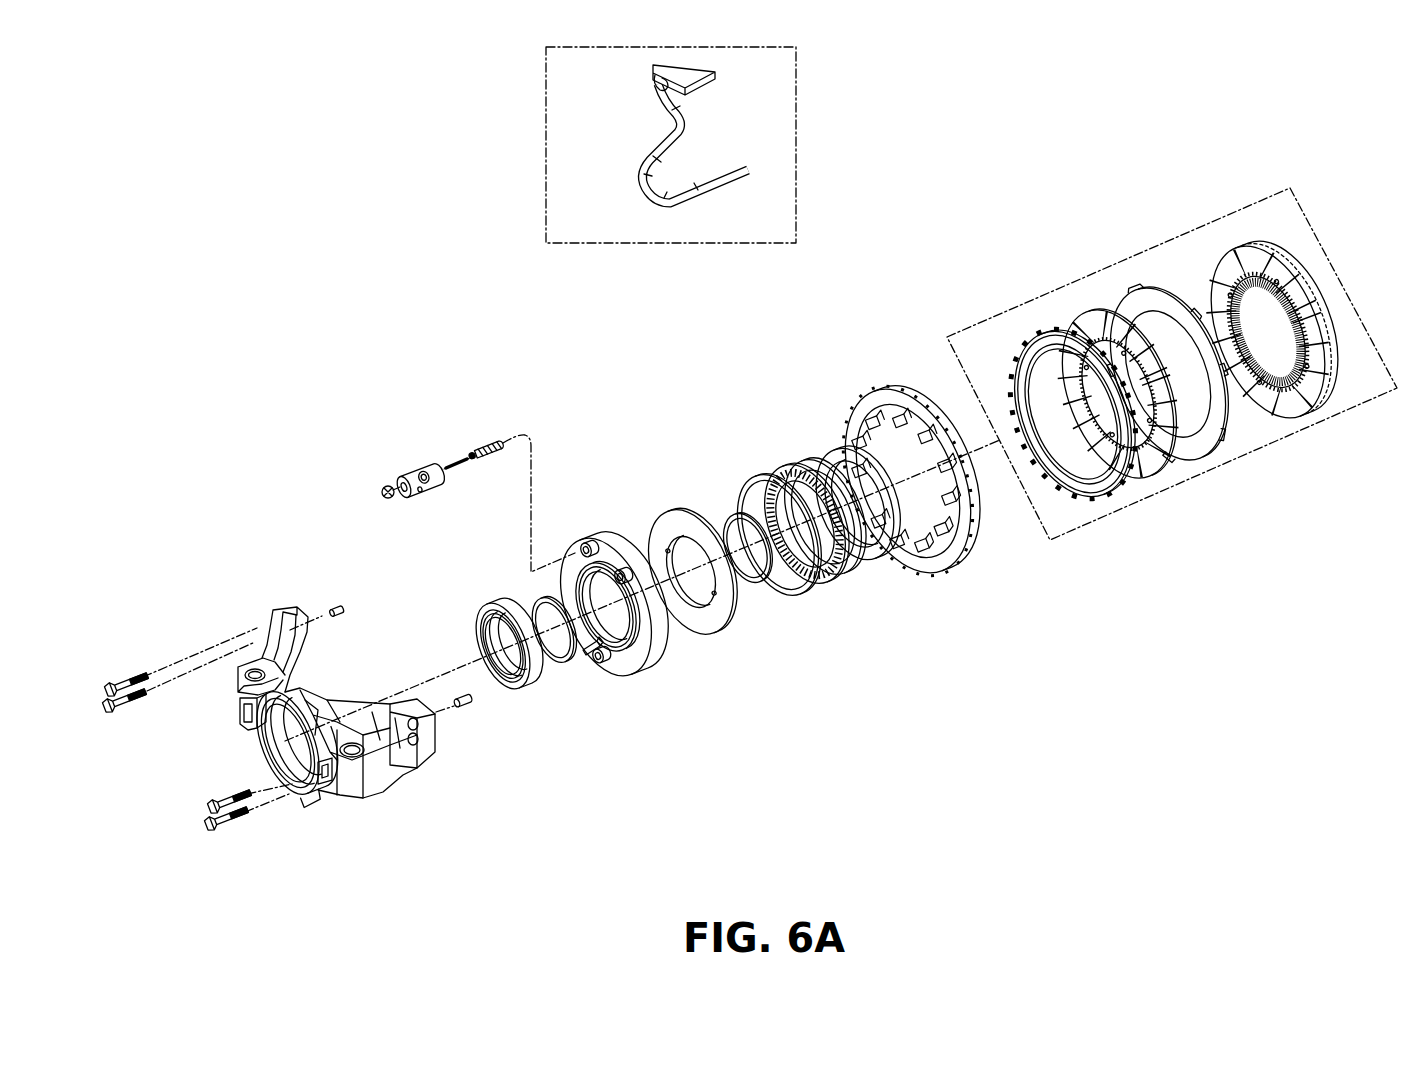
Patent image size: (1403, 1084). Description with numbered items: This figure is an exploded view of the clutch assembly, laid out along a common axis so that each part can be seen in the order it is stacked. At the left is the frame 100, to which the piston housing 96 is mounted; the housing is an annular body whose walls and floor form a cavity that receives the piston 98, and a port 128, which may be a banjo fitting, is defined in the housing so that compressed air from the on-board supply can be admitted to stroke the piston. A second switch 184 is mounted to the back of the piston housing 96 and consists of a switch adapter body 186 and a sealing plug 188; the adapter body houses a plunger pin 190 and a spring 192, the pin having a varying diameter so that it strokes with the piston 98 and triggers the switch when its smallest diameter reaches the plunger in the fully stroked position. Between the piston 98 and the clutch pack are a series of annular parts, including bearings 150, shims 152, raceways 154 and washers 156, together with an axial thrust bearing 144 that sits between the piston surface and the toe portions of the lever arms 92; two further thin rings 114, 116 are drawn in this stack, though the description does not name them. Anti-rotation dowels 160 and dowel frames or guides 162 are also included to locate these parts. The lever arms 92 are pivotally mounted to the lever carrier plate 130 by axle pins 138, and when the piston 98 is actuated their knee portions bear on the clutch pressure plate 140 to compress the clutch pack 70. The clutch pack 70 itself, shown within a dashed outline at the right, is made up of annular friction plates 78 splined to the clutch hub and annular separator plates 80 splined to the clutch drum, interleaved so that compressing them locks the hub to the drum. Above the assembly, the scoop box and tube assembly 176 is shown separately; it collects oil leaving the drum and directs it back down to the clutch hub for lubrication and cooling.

The clutch pack 70 is at (1172, 351).
The annular friction plates 78 is at (1158, 472).
The annular separator plates 80 is at (1203, 457).
The lever arms 92 is at (897, 525).
The piston housing 96 is at (653, 651).
The piston 98 is at (737, 630).
The frame 100 is at (380, 797).
The retaining ring 114 is at (747, 472).
The snap ring 116 is at (765, 587).
The port 128 is at (610, 662).
The lever carrier plate 130 is at (965, 562).
The axle pin 138 is at (897, 534).
The clutch pressure plate 140 is at (1117, 495).
The bearing 144 is at (785, 462).
The bearings 150 is at (528, 690).
The shims 152 is at (560, 673).
The raceways 154 is at (860, 562).
The washers 156 is at (890, 552).
The anti-rotation dowels 160 is at (595, 658).
The dowel frames or guides 162 is at (327, 607).
The scoop box and tube assembly 176 is at (543, 148).
The second switch 184 is at (353, 375).
The switch adapter body 186 is at (407, 467).
The sealing plug 188 is at (380, 485).
The plunger pin 190 is at (488, 438).
The spring 192 is at (452, 455).